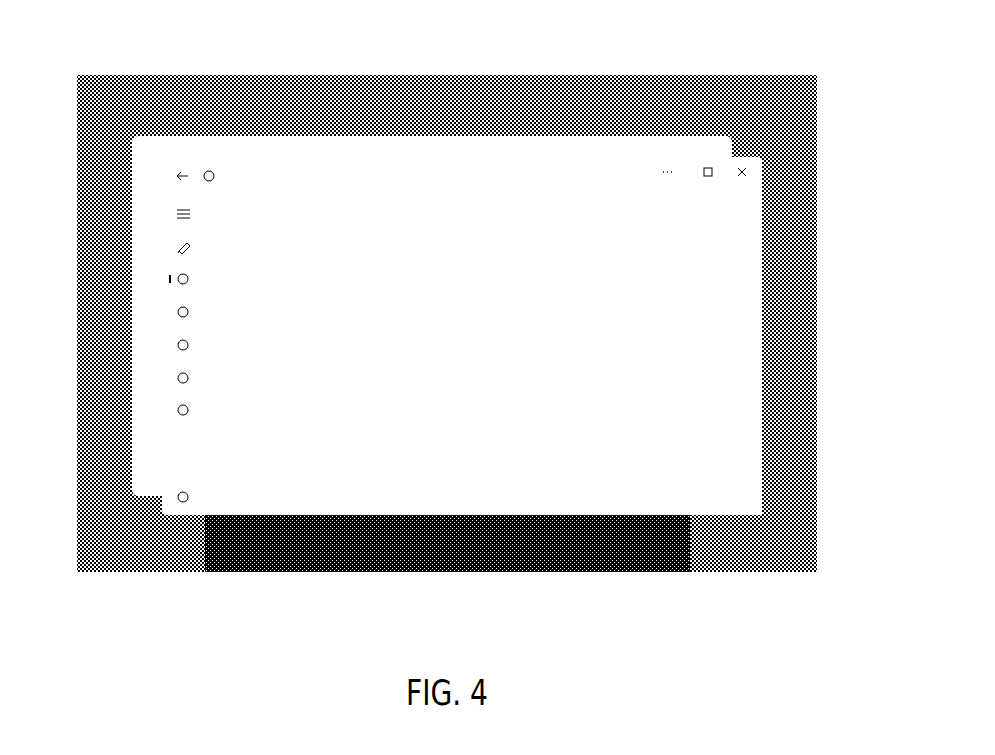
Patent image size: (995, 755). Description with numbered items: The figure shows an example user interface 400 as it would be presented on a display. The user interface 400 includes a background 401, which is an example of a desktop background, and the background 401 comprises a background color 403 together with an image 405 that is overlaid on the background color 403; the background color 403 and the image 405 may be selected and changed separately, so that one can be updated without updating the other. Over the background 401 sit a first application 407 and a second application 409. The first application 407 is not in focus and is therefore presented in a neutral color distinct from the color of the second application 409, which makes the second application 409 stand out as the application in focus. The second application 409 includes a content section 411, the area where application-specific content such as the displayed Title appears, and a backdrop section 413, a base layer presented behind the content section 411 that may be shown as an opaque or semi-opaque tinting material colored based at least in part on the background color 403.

The user interface 400 is at (449, 286).
The background 401 is at (75, 297).
The background color 403 is at (800, 460).
The image 405 is at (667, 530).
The first application 407 is at (133, 222).
The second application 409 is at (762, 418).
The content section 411 is at (750, 298).
The backdrop section 413 is at (755, 189).